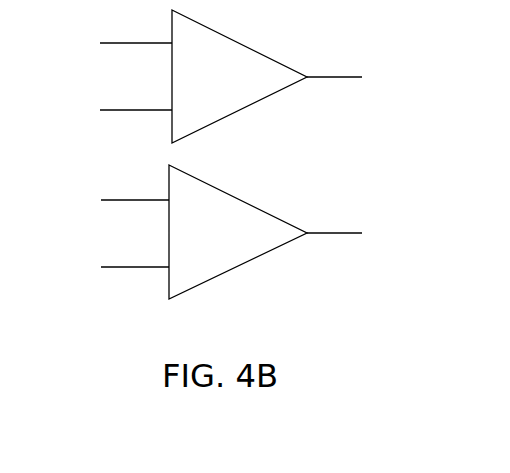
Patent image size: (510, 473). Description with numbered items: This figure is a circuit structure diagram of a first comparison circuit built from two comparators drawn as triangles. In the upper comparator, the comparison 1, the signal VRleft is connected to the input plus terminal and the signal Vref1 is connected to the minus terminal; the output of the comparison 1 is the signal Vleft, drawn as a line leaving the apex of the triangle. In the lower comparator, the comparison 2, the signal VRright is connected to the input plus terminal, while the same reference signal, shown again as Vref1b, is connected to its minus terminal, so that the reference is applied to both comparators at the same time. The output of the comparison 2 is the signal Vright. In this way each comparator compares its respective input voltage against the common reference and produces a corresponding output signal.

The comparison 1 is at (266, 76).
The comparison 2 is at (265, 232).
The signal VRleft is at (103, 44).
The signal Vref1 is at (112, 108).
The signal Vleft is at (334, 57).
The signal VRright is at (98, 204).
The signal Vref1 Vref1b is at (108, 268).
The signal Vright is at (334, 215).